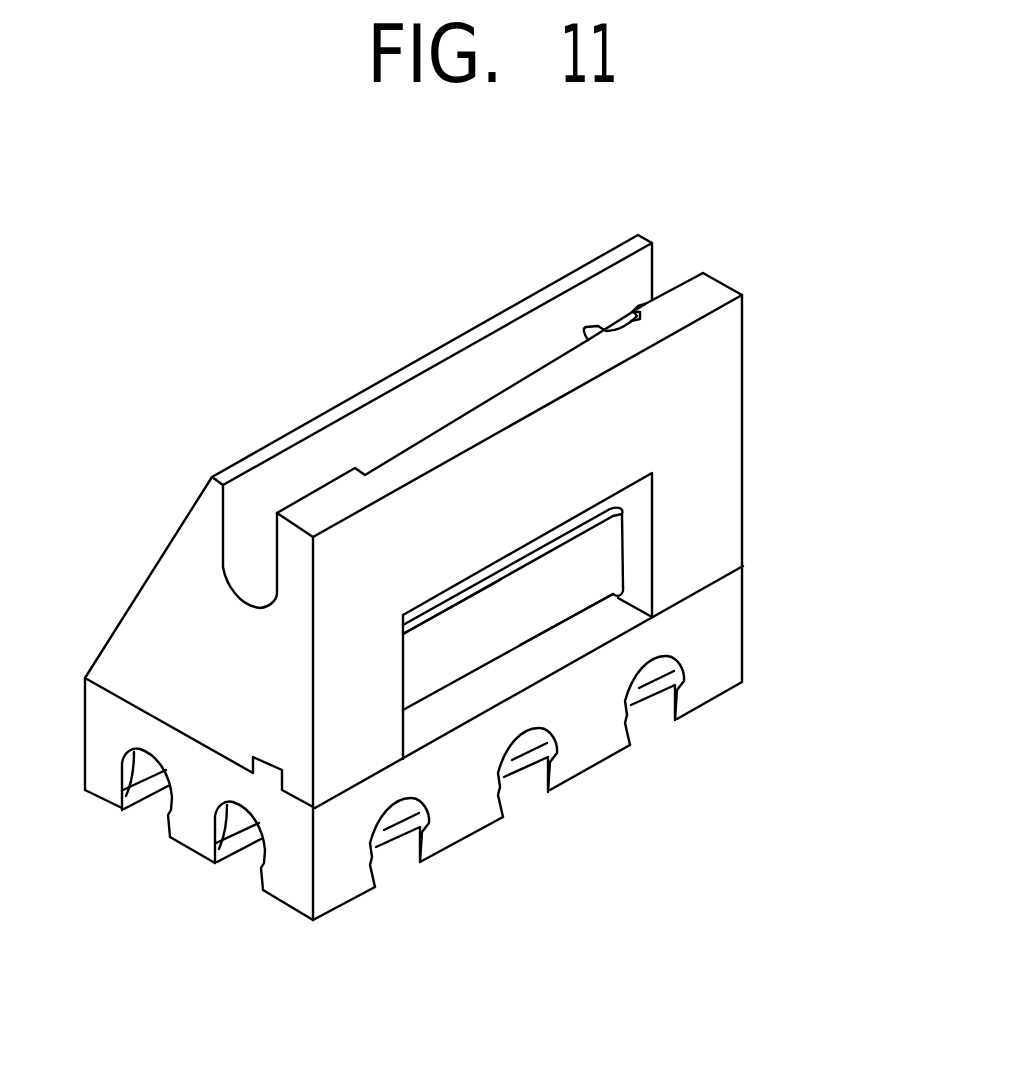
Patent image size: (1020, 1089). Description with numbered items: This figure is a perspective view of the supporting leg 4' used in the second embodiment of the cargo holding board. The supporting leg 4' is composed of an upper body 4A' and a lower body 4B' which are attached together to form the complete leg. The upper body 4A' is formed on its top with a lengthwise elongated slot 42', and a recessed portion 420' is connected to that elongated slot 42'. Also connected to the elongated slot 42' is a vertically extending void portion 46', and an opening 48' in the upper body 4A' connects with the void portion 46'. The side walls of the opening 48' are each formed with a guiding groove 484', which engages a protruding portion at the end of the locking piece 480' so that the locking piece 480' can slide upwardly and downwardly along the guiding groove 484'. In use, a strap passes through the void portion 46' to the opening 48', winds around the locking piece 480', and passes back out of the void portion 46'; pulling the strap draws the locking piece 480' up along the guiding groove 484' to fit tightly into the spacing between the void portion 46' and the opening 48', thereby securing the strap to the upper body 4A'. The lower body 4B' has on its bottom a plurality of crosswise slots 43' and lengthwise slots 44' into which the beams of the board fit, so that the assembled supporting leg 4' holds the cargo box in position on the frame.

The supporting leg 4' is at (413, 527).
The elongated slot 42' is at (457, 324).
The void portion 46' is at (708, 272).
The recessed portion 420' is at (148, 546).
The upper body 4A' is at (583, 596).
The lower body 4B' is at (491, 687).
The crosswise slots 43' is at (607, 808).
The lengthwise slots 44' is at (188, 860).
The opening 48' is at (623, 612).
The guiding groove 484' is at (512, 539).
The locking piece 480' is at (588, 719).